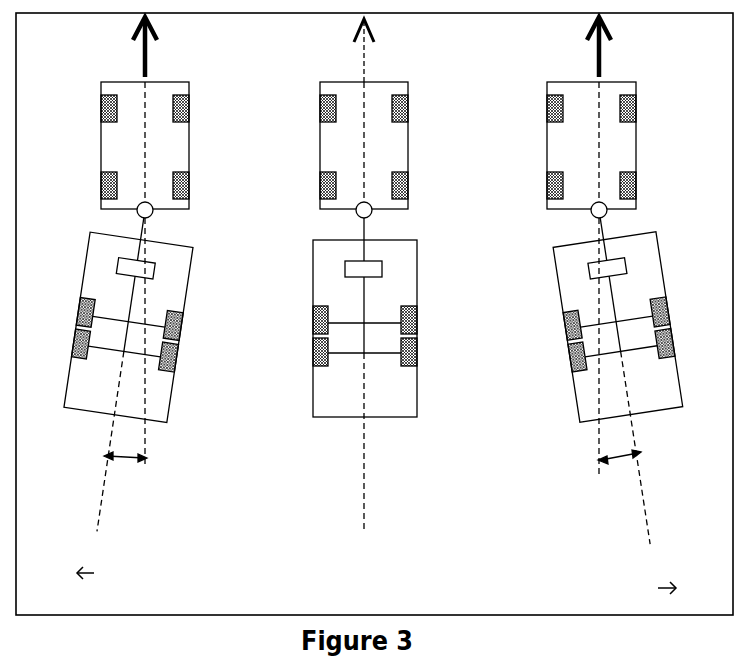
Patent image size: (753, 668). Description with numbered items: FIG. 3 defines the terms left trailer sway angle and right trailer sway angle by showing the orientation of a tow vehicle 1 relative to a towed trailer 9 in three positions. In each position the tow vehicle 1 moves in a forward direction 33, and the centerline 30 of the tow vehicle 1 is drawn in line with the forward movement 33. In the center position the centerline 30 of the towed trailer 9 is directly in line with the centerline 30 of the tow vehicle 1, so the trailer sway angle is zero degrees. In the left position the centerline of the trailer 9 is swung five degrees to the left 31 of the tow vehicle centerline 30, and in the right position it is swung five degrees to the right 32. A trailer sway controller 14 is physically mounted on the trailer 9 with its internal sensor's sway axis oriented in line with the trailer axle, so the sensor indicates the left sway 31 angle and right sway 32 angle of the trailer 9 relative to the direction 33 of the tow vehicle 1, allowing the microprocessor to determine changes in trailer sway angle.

The tow vehicle 1 is at (368, 117).
The towed trailer 9 is at (375, 381).
The trailer sway controller 14 is at (377, 267).
The centerline 30 is at (367, 452).
The trailer left sway angle 31 is at (108, 458).
The trailer right sway angle 32 is at (640, 455).
The direction of the tow vehicle 33 is at (366, 49).